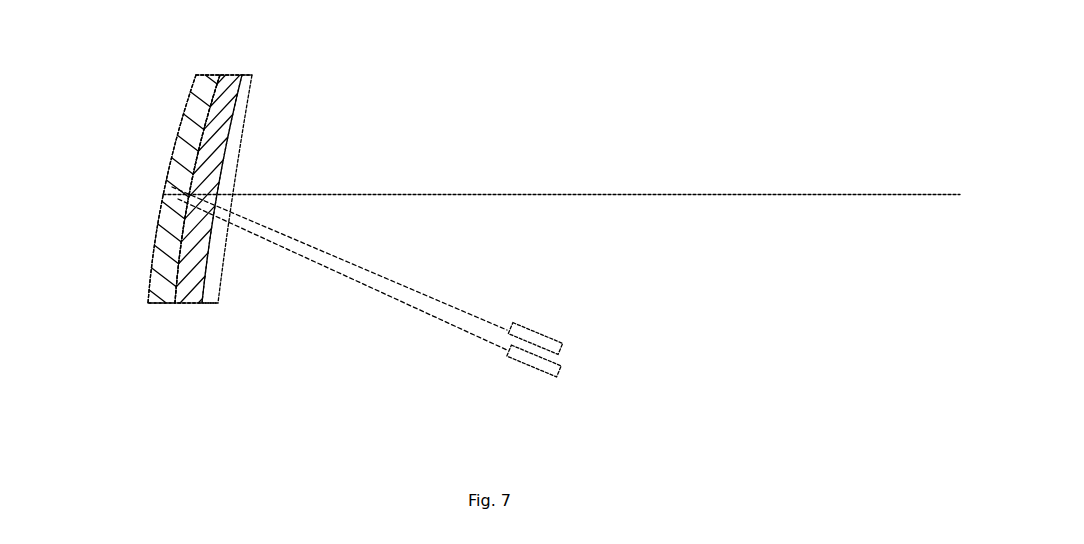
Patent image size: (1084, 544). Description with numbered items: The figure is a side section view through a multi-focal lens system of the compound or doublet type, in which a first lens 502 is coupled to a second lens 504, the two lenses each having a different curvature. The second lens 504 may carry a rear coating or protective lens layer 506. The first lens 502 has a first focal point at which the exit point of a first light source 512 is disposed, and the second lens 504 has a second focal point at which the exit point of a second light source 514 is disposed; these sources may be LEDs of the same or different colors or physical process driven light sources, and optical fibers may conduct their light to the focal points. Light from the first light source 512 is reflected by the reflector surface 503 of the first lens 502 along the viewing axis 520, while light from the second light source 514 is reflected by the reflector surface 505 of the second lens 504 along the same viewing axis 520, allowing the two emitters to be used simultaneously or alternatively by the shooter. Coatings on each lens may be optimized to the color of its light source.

The first lens 502 is at (155, 303).
The reflector surface 503 is at (180, 170).
The second lens 504 is at (202, 303).
The reflector surface 505 is at (215, 118).
The rear coating or protective lens layer 506 is at (235, 159).
The first light source 512 is at (507, 366).
The second light source 514 is at (532, 323).
The viewing axis 520 is at (588, 194).